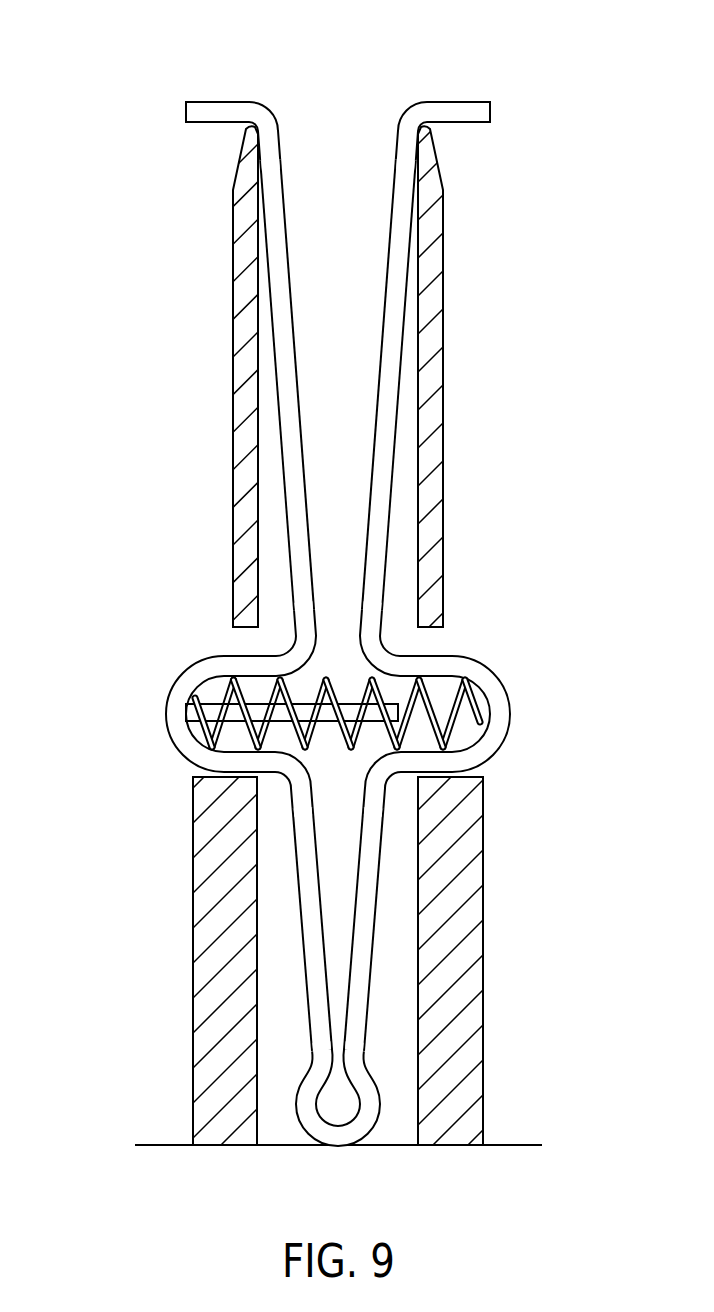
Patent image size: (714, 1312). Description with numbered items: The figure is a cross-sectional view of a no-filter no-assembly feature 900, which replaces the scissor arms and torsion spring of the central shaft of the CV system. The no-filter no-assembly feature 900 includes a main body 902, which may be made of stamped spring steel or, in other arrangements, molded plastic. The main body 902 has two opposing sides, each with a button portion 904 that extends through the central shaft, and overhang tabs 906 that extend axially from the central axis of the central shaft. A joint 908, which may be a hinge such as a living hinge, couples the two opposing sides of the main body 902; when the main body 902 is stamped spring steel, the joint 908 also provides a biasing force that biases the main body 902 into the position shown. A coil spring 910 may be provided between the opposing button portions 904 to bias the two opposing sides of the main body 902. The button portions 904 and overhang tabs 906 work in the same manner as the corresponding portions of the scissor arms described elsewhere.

The no-filter no-assembly feature 900 is at (126, 54).
The main body 902 is at (290, 475).
The button portions 904 is at (190, 677).
The overhang tabs 906 is at (202, 110).
The joint 908 is at (367, 1120).
The coil spring 910 is at (450, 727).